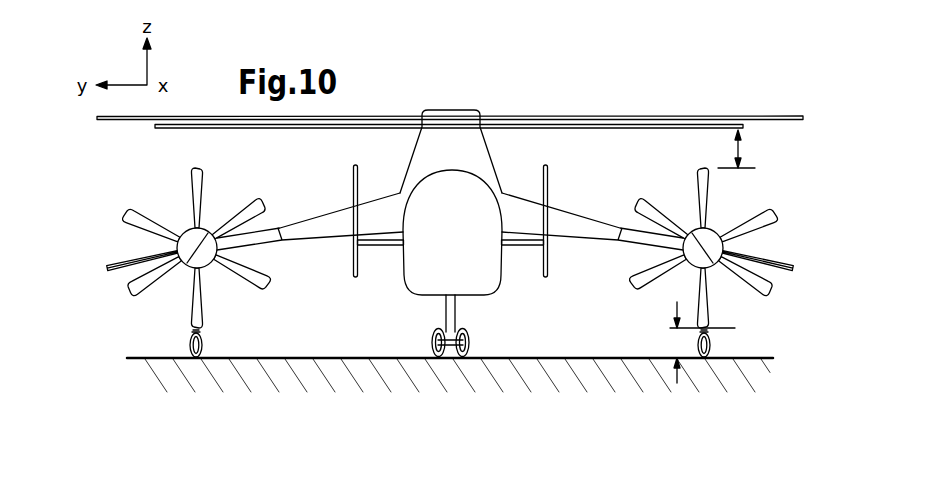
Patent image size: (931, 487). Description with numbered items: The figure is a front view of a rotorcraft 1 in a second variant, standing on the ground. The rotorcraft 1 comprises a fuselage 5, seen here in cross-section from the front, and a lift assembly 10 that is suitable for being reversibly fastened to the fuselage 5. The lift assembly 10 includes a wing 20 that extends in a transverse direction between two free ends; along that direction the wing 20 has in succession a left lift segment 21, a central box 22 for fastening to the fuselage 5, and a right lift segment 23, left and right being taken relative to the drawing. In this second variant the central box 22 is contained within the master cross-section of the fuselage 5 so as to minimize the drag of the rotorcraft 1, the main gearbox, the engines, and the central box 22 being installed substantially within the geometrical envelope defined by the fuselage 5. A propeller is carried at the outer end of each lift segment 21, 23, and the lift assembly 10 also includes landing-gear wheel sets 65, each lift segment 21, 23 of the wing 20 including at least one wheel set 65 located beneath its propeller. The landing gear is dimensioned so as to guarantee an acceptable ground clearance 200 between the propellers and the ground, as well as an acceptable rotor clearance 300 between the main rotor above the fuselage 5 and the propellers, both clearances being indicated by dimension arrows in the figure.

The rotorcraft 1 is at (740, 80).
The fuselage 5 is at (402, 271).
The lift assembly 10 is at (512, 91).
The wing 20 is at (590, 216).
The left lift segment 21 is at (603, 222).
The central box 22 is at (457, 143).
The right lift segment 23 is at (298, 241).
The landing-gear wheel set 65 is at (211, 331).
The ground clearance 200 is at (686, 342).
The rotor clearance 300 is at (754, 149).